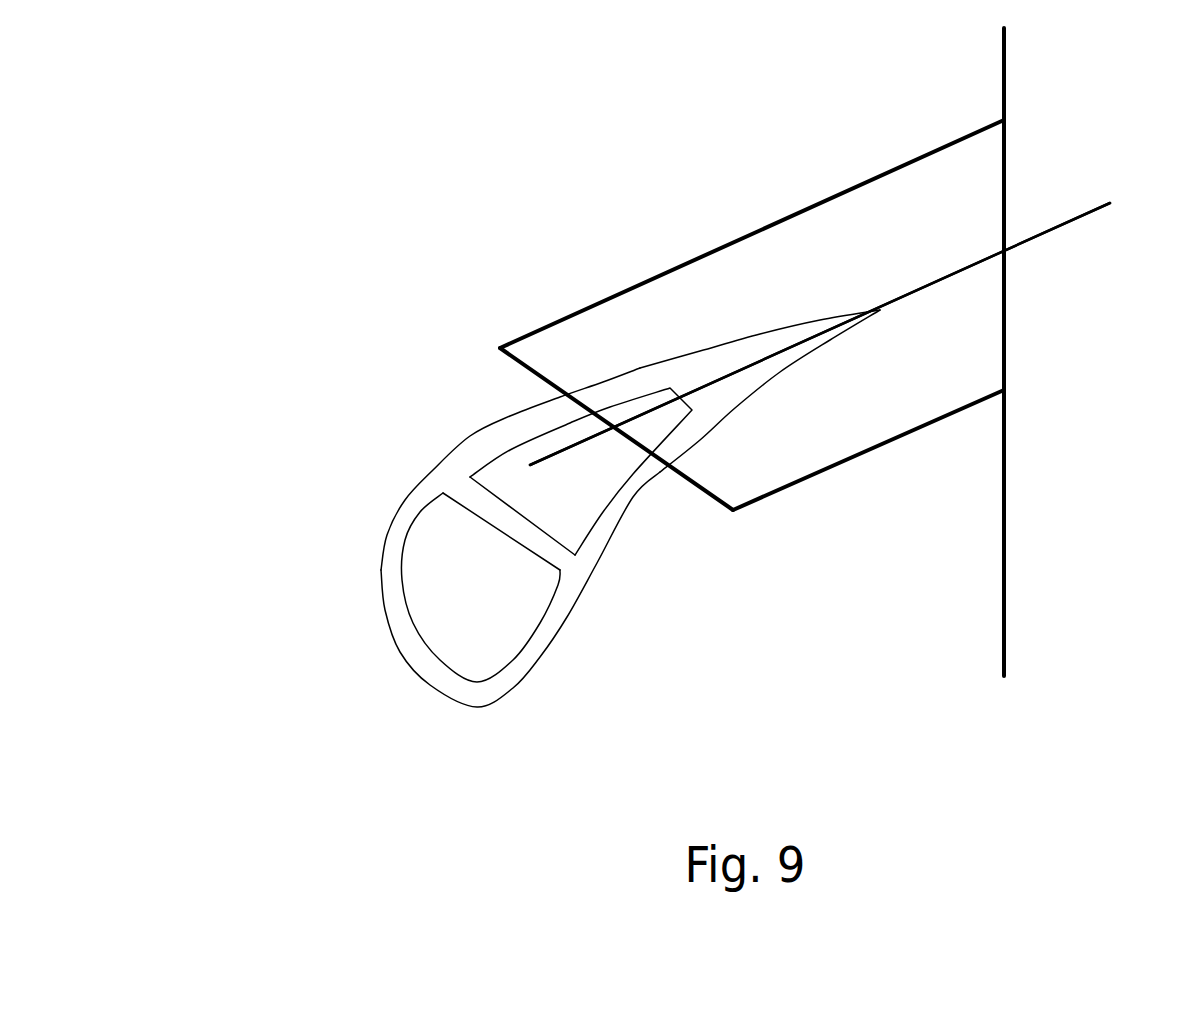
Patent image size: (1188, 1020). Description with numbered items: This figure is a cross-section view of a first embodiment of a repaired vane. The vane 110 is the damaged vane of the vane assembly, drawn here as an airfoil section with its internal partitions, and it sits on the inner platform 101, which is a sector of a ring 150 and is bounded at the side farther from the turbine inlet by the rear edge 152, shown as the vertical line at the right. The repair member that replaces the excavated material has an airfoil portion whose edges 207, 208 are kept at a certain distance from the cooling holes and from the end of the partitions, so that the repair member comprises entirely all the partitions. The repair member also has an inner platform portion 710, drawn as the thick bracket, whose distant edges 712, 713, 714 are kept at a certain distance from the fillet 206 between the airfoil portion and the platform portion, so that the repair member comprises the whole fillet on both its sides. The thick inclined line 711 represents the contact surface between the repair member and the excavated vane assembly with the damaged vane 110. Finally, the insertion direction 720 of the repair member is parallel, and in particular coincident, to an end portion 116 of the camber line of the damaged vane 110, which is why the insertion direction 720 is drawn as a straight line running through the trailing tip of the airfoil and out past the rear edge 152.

The vane 110 is at (332, 670).
The inner platform 101 is at (697, 740).
The ring 150 is at (697, 740).
The rear edge 152 is at (1029, 352).
The fillet 206 is at (722, 345).
The edge 207 is at (560, 398).
The edge 208 is at (665, 469).
The inner platform portion 710 is at (828, 315).
The contact surface 711 is at (626, 429).
The distant edge 712 is at (752, 234).
The distant edge 713 is at (980, 255).
The distant edge 714 is at (868, 441).
The insertion direction 720 is at (848, 298).
The end portion of a camber line 116 is at (848, 298).